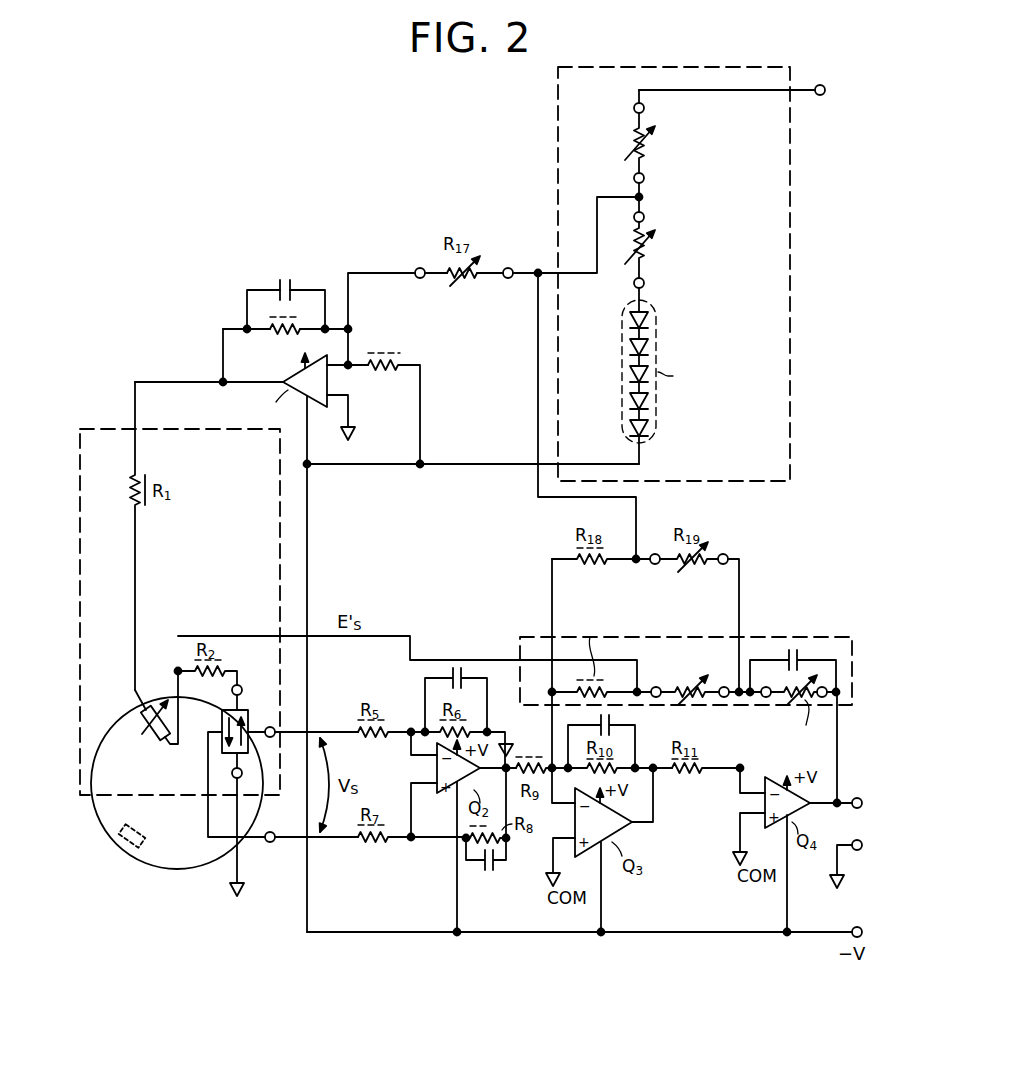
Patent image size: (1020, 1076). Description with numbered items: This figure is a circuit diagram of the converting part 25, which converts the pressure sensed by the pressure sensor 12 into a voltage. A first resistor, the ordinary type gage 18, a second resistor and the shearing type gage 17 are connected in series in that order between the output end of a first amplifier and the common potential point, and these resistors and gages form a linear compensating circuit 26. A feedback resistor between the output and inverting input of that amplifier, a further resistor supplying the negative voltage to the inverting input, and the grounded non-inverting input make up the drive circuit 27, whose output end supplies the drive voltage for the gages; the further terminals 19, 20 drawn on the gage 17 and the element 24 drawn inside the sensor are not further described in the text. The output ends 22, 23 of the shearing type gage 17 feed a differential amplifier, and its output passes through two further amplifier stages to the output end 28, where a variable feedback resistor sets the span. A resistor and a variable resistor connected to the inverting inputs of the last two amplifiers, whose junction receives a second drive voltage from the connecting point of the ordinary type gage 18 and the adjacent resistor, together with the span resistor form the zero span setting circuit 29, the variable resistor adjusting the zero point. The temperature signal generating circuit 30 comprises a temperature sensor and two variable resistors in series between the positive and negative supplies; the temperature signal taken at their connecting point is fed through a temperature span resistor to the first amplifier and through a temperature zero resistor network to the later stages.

The sensor housing 12 is at (185, 868).
The shearing type gage 17 is at (220, 720).
The ordinary type gage 18 is at (143, 740).
The control current input terminal 19 is at (244, 686).
The control current return terminal 20 is at (232, 774).
The output end of the shearing type gage 22 is at (270, 727).
The output end of the shearing type gage 23 is at (270, 842).
The magnet 24 is at (128, 850).
The converting part 25 is at (335, 230).
The linear compensating circuit 26 is at (100, 428).
The drive circuit 27 is at (220, 312).
The output end of amplifier Q4 28 is at (856, 797).
The zero span setting circuit 29 is at (782, 637).
The temperature signal generating circuit 30 is at (558, 117).